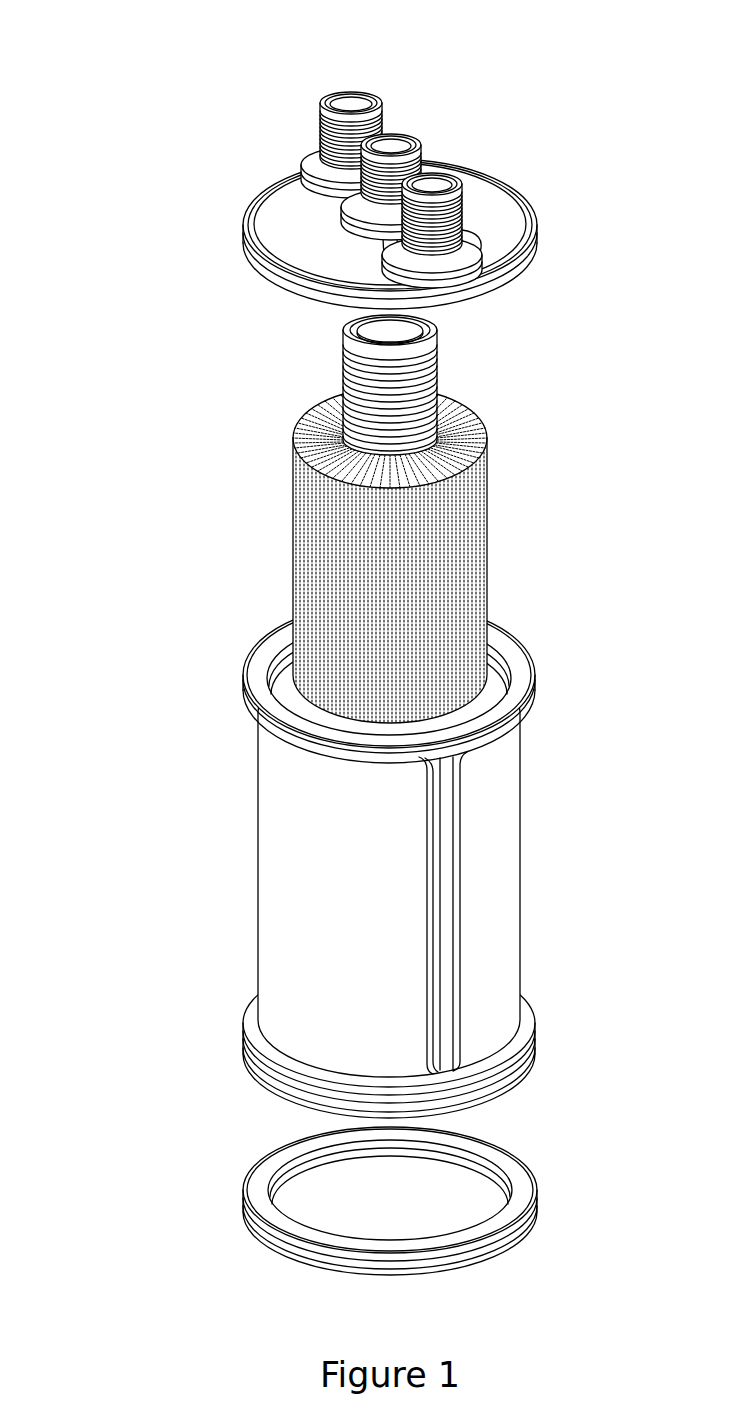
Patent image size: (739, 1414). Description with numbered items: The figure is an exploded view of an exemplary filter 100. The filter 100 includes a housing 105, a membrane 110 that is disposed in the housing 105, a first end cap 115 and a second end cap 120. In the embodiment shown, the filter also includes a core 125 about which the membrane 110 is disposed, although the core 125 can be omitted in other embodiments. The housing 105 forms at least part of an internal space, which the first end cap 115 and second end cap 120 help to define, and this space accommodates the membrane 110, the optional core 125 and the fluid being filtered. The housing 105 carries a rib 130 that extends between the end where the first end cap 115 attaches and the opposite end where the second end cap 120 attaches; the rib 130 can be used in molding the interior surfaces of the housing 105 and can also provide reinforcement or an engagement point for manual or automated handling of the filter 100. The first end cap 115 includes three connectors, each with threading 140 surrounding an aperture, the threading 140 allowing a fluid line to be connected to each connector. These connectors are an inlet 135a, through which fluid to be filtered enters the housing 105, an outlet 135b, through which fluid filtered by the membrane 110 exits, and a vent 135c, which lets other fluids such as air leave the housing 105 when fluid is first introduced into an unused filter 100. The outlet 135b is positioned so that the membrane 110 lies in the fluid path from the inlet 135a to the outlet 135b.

The filter 100 is at (130, 145).
The housing 105 is at (257, 870).
The membrane 110 is at (291, 563).
The first end cap 115 is at (243, 223).
The second end cap 120 is at (340, 1263).
The core 125 is at (413, 369).
The rib 130 is at (452, 937).
The inlet 135a is at (348, 100).
The outlet 135b is at (393, 141).
The vent 135c is at (465, 174).
The threading 140 is at (320, 118).